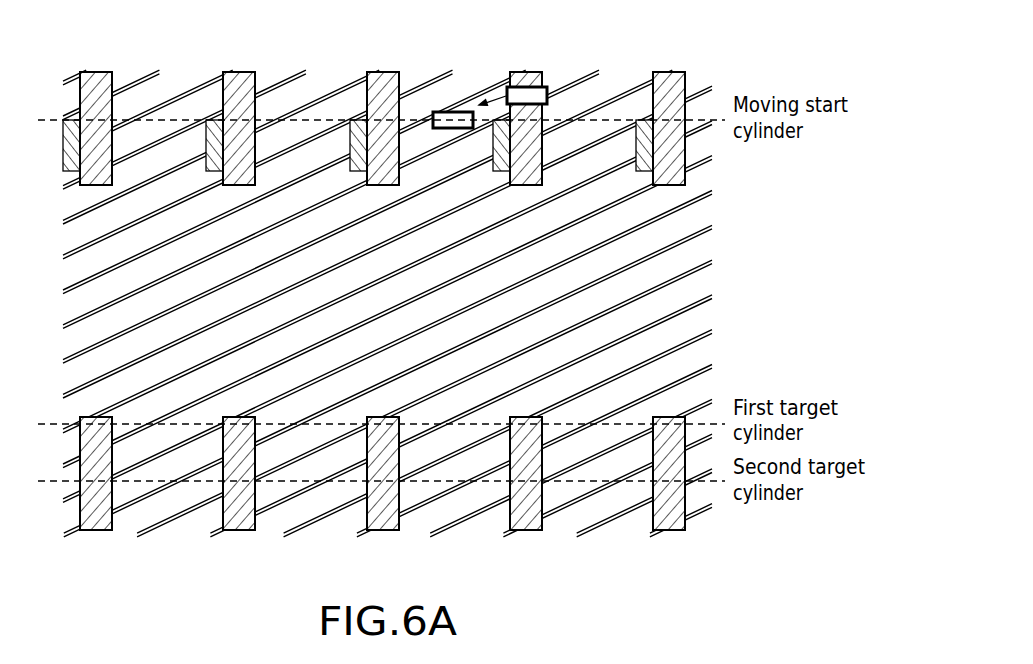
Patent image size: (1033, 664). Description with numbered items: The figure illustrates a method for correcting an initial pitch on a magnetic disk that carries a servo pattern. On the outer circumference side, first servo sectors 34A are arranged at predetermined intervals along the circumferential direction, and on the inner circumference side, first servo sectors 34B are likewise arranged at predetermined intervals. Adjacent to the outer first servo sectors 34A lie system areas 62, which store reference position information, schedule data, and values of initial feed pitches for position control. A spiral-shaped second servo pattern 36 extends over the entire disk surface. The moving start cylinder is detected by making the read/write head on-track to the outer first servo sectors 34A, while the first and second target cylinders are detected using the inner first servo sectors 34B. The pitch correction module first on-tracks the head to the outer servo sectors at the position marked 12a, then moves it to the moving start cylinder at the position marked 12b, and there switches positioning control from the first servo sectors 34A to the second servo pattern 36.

The first servo sectors (outer circumference side) 34A is at (100, 72).
The first servo sectors (inner circumference side) 34B is at (97, 532).
The system areas 62 is at (72, 120).
The read/write head position on-tracked to the first servo sectors 12a is at (552, 87).
The read/write head position at the moving start cylinder 12b is at (463, 112).
The second servo pattern 36 is at (557, 518).